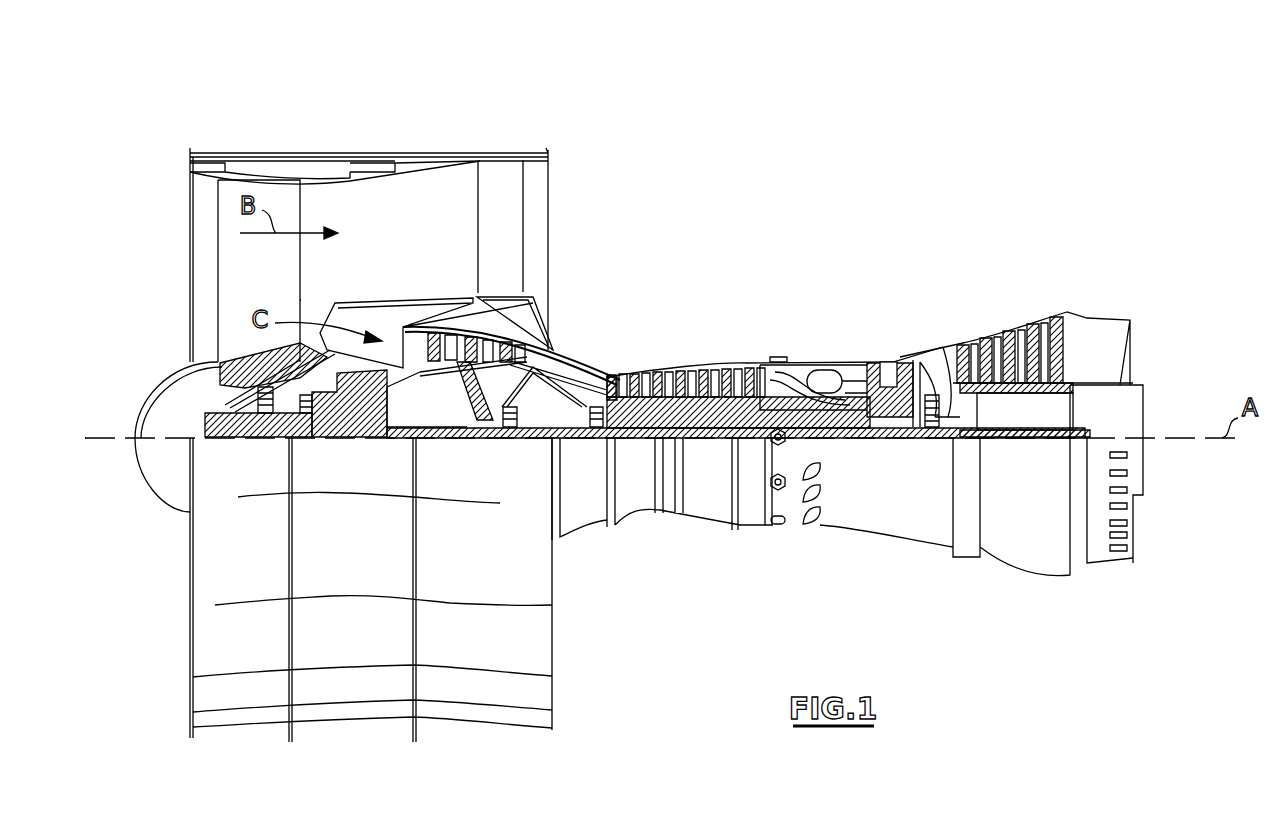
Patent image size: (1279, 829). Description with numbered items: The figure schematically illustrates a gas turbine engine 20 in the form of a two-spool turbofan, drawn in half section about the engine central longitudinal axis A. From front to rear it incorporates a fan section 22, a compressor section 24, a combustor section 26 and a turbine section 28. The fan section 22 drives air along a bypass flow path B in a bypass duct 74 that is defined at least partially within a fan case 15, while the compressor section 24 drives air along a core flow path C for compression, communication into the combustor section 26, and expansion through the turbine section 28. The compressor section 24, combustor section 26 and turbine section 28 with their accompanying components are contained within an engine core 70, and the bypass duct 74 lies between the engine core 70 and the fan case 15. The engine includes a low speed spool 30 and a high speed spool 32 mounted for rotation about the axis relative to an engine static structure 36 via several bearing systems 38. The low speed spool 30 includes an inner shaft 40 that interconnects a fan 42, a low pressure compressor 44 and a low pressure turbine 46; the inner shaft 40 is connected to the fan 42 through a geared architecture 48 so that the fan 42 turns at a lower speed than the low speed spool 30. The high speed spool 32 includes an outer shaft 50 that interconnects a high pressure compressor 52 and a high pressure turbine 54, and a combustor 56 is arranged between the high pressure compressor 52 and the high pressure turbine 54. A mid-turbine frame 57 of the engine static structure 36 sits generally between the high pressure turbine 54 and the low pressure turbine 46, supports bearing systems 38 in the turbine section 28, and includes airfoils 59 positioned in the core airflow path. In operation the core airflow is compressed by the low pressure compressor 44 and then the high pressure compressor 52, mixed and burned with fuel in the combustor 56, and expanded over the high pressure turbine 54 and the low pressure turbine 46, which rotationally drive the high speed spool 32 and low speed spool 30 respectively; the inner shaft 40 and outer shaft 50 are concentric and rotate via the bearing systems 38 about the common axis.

The gas turbine engine 20 is at (836, 204).
The fan section 22 is at (303, 146).
The fan case 15 is at (370, 160).
The fan 42 is at (244, 283).
The bypass duct 74 is at (392, 245).
The geared architecture 48 is at (378, 418).
The low pressure compressor 44 is at (460, 350).
The bearing systems 38 is at (510, 418).
The inner shaft 40 is at (573, 450).
The compressor section 24 is at (607, 344).
The high pressure compressor 52 is at (683, 402).
The combustor section 26 is at (825, 328).
The high speed spool 32 is at (750, 395).
The combustor 56 is at (826, 372).
The high pressure turbine 54 is at (895, 362).
The mid-turbine frame 57 is at (937, 350).
The turbine section 28 is at (976, 296).
The low pressure turbine 46 is at (1018, 330).
The airfoils 59 is at (950, 400).
The low speed spool 30 is at (710, 446).
The engine static structure 36 is at (750, 526).
The engine core 70 is at (853, 528).
The outer shaft 50 is at (828, 438).